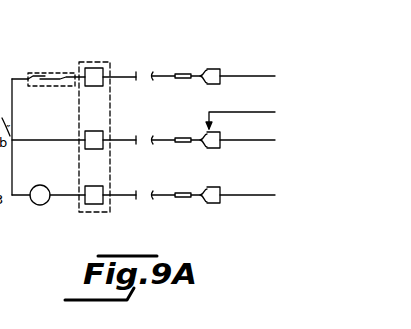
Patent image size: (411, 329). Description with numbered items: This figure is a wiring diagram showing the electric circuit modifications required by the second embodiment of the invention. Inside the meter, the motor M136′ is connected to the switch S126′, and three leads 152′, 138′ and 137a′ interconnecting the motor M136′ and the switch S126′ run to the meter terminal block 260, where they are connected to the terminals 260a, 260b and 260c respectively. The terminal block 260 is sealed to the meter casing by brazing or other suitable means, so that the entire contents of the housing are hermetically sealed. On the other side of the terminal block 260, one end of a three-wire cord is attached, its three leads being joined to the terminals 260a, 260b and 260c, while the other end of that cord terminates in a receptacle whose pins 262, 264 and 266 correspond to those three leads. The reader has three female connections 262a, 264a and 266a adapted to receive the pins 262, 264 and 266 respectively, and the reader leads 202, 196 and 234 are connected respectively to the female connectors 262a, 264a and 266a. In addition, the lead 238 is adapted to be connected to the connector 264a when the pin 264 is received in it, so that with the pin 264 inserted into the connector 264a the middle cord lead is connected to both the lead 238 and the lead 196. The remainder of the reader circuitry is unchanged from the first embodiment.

The lead 152′ is at (72, 73).
The switch S126′ is at (47, 72).
The meter terminal block 260 is at (97, 62).
The terminal 260a is at (97, 86).
The terminal 260b is at (84, 137).
The terminal 260c is at (95, 206).
The pin 262 is at (186, 73).
The female connection 262a is at (217, 69).
The lead 202 is at (230, 77).
The lead 138′ is at (13, 139).
The pin 264 is at (182, 136).
The female connection 264a is at (202, 145).
The lead 238 is at (233, 112).
The lead 196 is at (243, 141).
The lead 137a′ is at (62, 172).
The motor M136′ is at (37, 206).
The pin 266 is at (192, 183).
The female connection 266a is at (202, 203).
The lead 234 is at (247, 198).